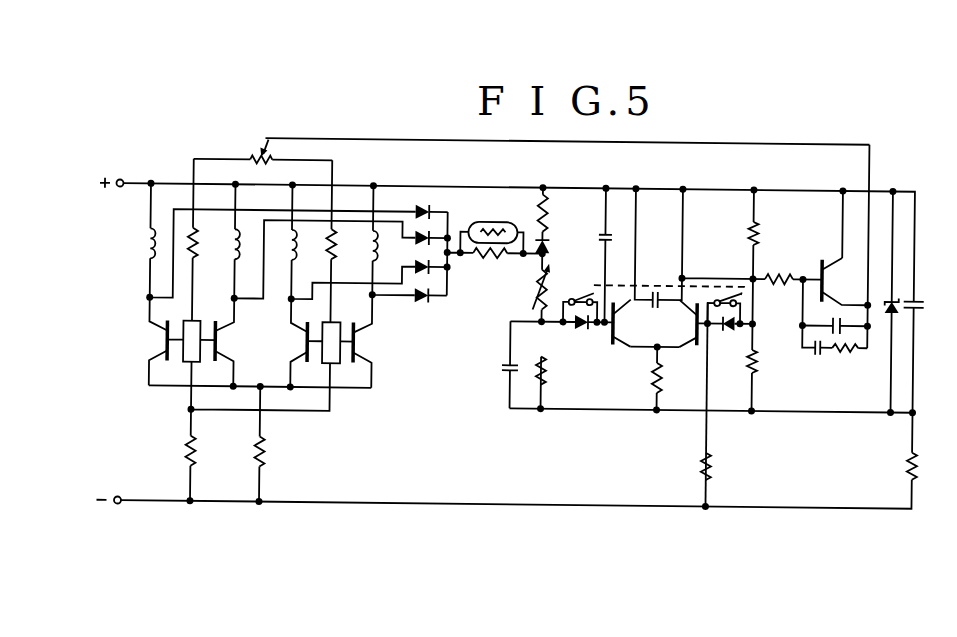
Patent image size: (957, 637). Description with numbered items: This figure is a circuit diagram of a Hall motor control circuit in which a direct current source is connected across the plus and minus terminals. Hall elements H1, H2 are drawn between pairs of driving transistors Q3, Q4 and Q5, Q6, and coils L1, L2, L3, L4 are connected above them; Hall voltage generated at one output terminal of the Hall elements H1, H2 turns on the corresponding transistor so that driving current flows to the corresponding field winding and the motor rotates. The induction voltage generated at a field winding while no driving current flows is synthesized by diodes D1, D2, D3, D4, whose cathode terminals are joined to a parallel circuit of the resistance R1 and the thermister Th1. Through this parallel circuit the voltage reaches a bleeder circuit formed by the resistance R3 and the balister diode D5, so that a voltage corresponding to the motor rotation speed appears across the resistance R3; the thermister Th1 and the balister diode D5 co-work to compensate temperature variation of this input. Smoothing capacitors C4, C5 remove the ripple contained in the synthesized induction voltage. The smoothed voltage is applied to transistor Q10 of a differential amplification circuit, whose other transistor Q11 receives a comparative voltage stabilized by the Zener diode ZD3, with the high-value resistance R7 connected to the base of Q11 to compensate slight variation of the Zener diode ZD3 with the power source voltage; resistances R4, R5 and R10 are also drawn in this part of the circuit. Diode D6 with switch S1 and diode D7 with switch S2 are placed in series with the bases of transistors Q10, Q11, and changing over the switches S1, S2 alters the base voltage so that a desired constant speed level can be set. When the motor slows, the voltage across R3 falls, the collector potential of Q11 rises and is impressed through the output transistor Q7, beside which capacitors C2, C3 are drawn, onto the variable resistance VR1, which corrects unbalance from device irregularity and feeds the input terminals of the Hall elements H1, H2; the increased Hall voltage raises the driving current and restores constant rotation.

The variable resistance VR1 is at (263, 144).
The coil L1 is at (140, 245).
The coil L2 is at (282, 246).
The coil L3 is at (225, 246).
The coil L4 is at (363, 247).
The Hall element H1 is at (195, 330).
The Hall element H2 is at (333, 330).
The transistor Q3 is at (157, 341).
The transistor Q4 is at (223, 342).
The transistor Q5 is at (296, 343).
The transistor Q6 is at (362, 340).
The diode D1 is at (426, 206).
The diode D2 is at (420, 266).
The diode D3 is at (420, 237).
The diode D4 is at (426, 299).
The thermister Th1 is at (492, 223).
The resistance R1 is at (501, 270).
The resistance R3 is at (555, 213).
The balister diode D5 is at (555, 250).
The smoothing capacitor C5 is at (544, 309).
The switch S1 is at (653, 297).
The diode D6 is at (583, 336).
The transistor Q10 is at (635, 322).
The transistor Q11 is at (684, 323).
The smoothing capacitor C4 is at (657, 286).
The switch S2 is at (737, 303).
The diode D7 is at (724, 337).
The resistor R4 is at (764, 361).
The resistor R5 is at (766, 236).
The output transistor Q7 is at (845, 282).
The capacitor C2 is at (836, 318).
The capacitor C3 is at (820, 366).
The Zener diode ZD3 is at (899, 300).
The resistance R7 is at (719, 470).
The resistor R10 is at (899, 469).